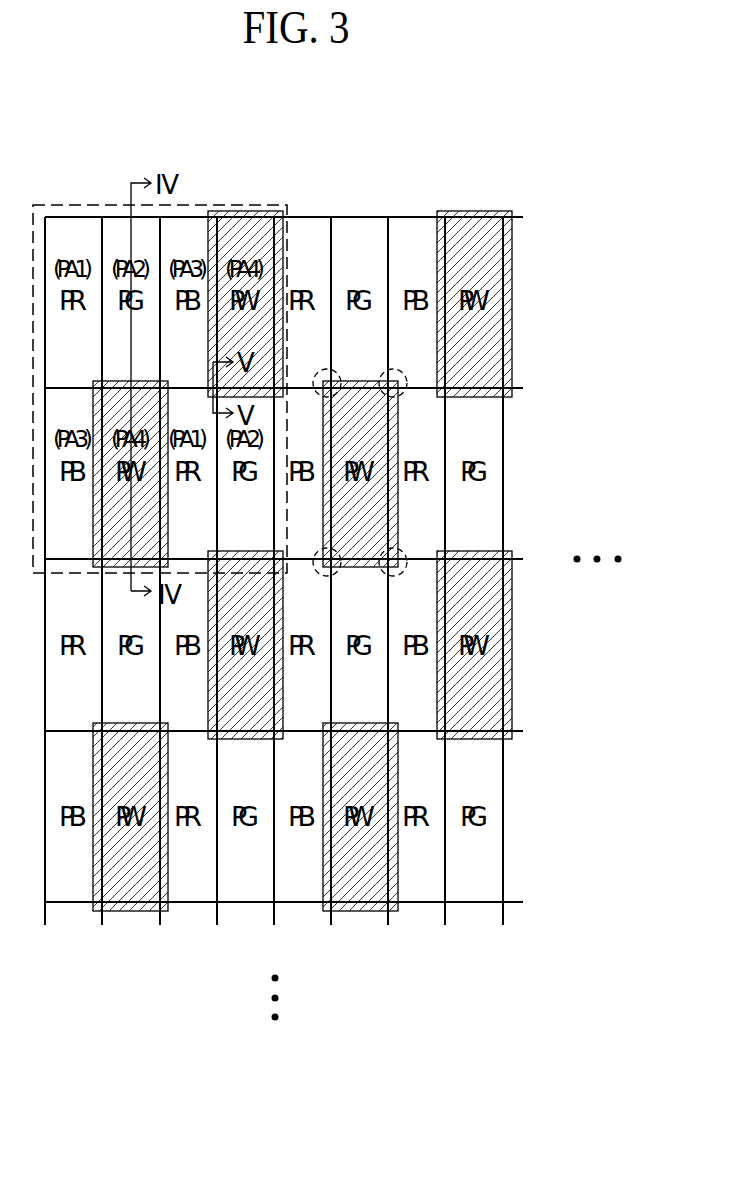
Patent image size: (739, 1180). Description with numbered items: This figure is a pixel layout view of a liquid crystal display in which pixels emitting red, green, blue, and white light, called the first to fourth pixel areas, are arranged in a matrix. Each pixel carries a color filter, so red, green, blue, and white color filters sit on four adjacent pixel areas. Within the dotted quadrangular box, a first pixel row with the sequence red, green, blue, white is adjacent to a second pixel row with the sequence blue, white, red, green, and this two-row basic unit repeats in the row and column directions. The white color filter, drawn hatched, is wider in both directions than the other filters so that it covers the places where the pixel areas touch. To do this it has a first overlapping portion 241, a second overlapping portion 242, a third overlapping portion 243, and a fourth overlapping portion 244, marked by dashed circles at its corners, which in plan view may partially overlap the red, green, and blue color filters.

The first overlapping portion 241 is at (340, 373).
The second overlapping portion 242 is at (405, 375).
The third overlapping portion 243 is at (405, 552).
The fourth overlapping portion 244 is at (338, 573).